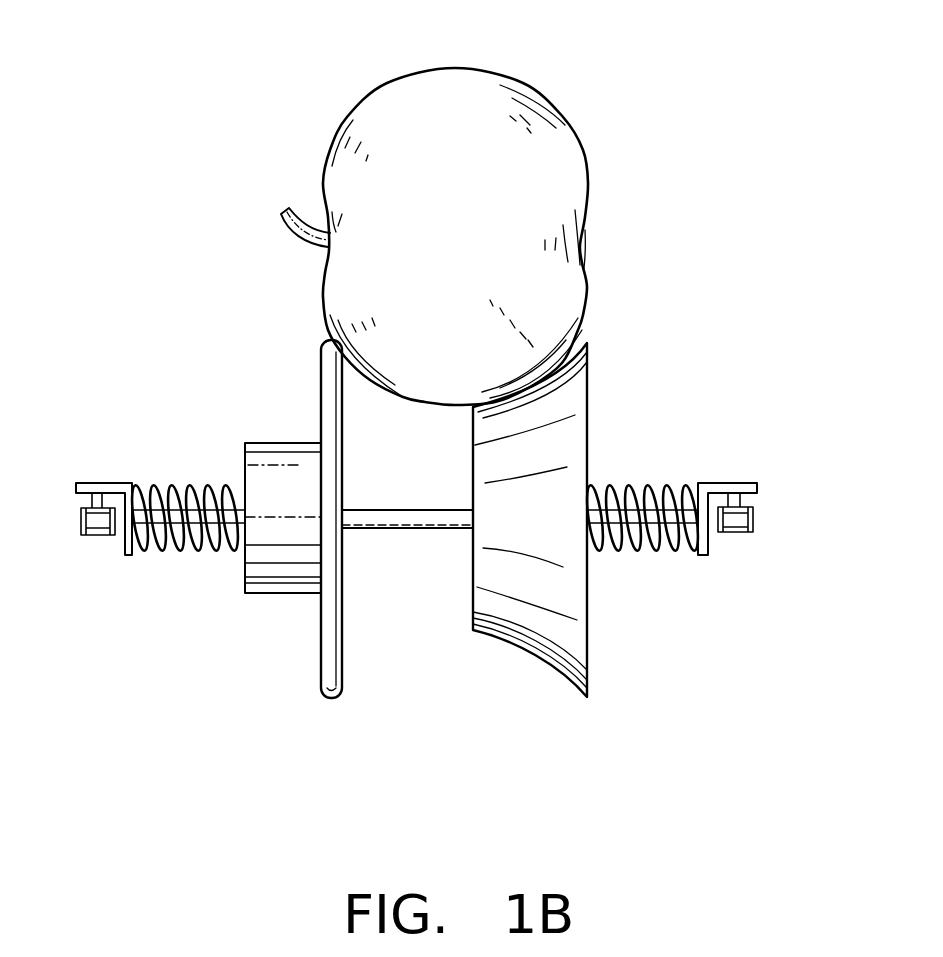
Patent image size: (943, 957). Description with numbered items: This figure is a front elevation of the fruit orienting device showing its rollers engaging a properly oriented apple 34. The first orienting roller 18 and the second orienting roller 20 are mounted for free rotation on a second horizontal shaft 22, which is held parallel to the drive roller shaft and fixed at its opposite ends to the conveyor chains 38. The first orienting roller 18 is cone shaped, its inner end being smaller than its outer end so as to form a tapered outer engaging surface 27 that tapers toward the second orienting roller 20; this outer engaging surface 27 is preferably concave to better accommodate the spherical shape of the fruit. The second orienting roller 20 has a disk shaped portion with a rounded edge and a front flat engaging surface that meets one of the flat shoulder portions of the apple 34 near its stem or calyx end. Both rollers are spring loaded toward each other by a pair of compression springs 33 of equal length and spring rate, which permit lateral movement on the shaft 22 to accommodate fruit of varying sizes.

The apple 34 is at (558, 158).
The first orienting roller 18 is at (563, 537).
The outer engaging surface 27 is at (523, 647).
The second orienting roller 20 is at (273, 580).
The second horizontal shaft 22 is at (415, 522).
The compression springs 33 is at (185, 553).
The conveyor chains 38 is at (100, 535).